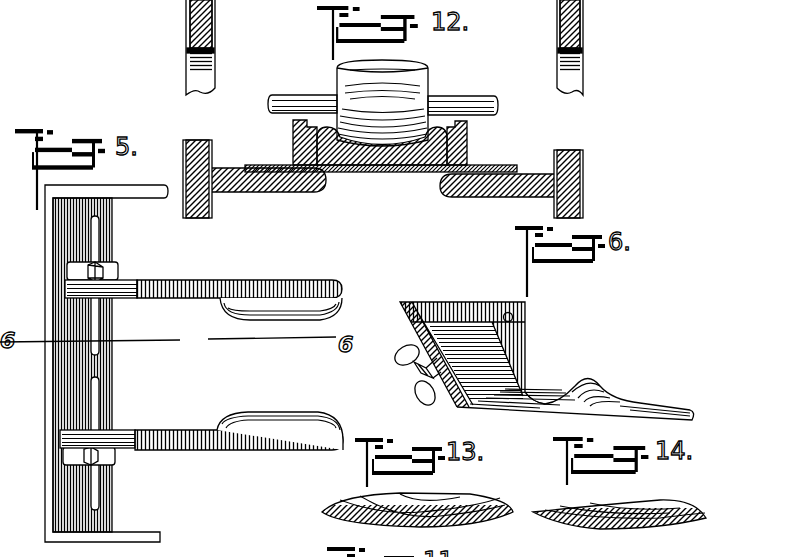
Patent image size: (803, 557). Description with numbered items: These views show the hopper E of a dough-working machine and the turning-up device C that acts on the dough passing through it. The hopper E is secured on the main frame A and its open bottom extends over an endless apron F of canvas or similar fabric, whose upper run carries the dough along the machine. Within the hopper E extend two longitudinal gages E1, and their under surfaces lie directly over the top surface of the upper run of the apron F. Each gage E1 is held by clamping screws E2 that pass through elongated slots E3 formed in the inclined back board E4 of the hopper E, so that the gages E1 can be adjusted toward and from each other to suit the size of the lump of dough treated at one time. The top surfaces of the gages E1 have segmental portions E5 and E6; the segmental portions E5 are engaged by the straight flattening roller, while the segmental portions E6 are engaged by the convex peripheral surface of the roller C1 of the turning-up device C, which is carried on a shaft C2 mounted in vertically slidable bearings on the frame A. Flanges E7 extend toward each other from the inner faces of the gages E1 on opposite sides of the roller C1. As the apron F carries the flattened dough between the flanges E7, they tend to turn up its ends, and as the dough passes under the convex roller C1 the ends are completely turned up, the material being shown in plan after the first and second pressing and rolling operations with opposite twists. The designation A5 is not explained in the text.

In FIG. 12, the main frame A is at (186, 42).
In FIG. 12, the rail arm A5 is at (270, 193).
In FIG. 12, the turning-up device C is at (365, 103).
In FIG. 12, the roller C1 is at (410, 74).
In FIG. 12, the shaft C2 is at (486, 100).
In FIG. 5, the hopper E is at (45, 266).
In FIG. 6, the hopper E is at (473, 354).
In FIG. 12, the gages E1 is at (293, 128).
In FIG. 5, the gages E1 is at (150, 280).
In FIG. 6, the gages E1 is at (492, 407).
In FIG. 5, the clamping screws E2 is at (103, 268).
In FIG. 6, the clamping screws E2 is at (412, 375).
In FIG. 5, the elongated slots E3 is at (93, 318).
In FIG. 5, the inclined back board E4 is at (99, 355).
In FIG. 6, the inclined back board E4 is at (458, 410).
In FIG. 5, the segmental portions E5 is at (182, 299).
In FIG. 6, the segmental portions E5 is at (545, 400).
In FIG. 5, the segmental portions E6 is at (288, 282).
In FIG. 6, the segmental portions E6 is at (612, 392).
In FIG. 12, the flanges E7 is at (300, 152).
In FIG. 5, the flanges E7 is at (288, 320).
In FIG. 6, the flanges E7 is at (608, 418).
In FIG. 12, the endless apron F is at (390, 174).